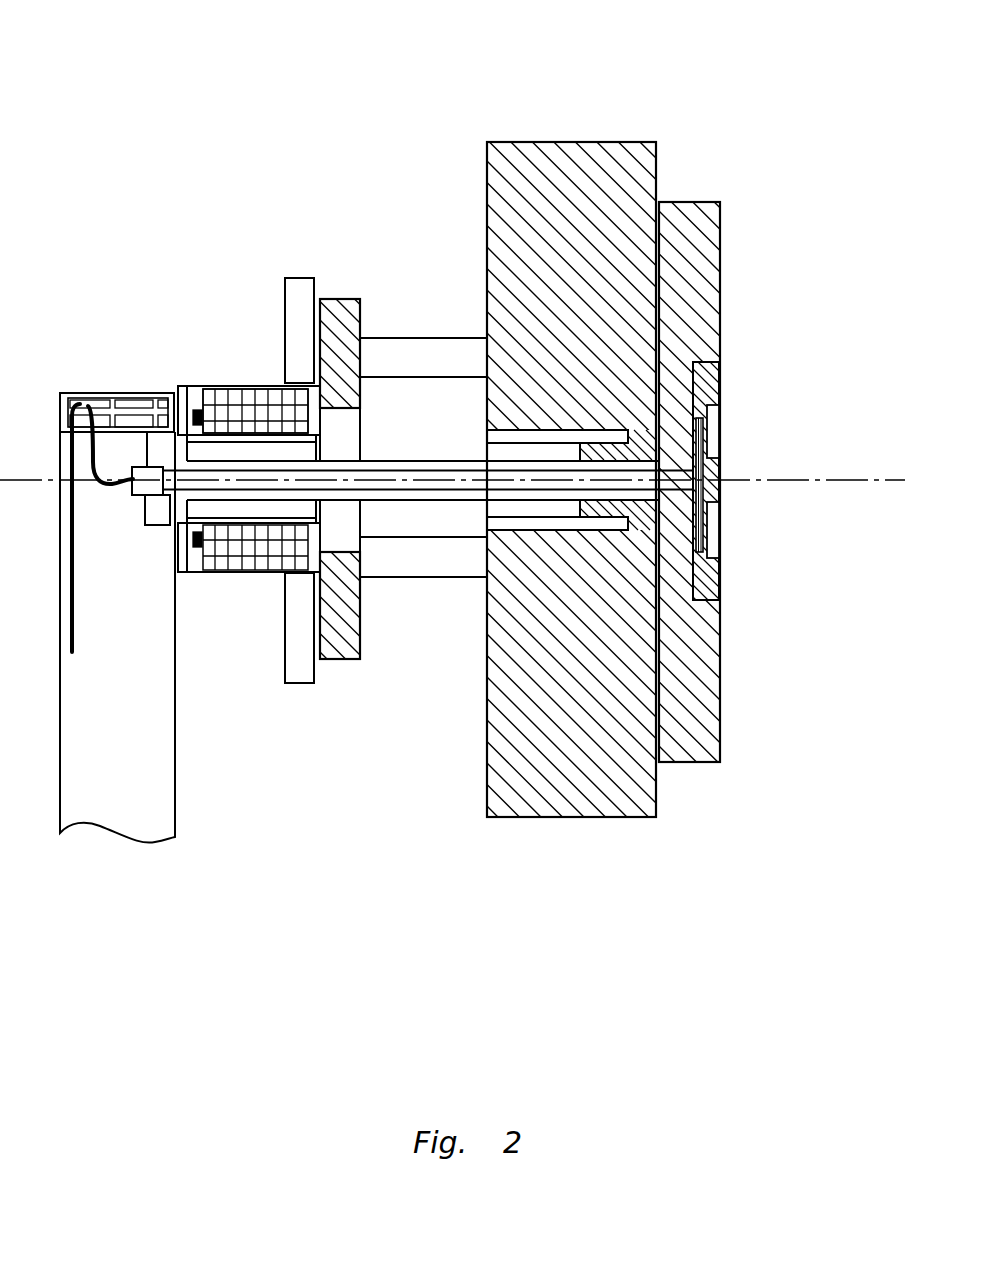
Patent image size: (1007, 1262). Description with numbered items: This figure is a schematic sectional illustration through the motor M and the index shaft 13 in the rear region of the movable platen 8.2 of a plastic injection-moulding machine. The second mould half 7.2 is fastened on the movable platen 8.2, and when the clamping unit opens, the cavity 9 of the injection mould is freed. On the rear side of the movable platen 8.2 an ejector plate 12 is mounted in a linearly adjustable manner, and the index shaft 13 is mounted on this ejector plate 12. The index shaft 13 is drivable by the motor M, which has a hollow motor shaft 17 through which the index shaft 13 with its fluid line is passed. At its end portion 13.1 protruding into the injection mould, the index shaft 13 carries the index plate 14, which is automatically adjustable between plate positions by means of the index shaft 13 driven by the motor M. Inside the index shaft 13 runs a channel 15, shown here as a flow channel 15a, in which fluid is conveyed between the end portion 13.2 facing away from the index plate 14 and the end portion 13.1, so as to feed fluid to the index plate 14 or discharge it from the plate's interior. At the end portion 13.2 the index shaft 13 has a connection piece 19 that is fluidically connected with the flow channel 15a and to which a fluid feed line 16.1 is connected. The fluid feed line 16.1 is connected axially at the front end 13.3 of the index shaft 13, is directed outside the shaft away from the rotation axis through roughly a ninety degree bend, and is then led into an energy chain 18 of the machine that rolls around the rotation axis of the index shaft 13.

The second mould half 7.2 is at (692, 212).
The movable platen 8.2 is at (565, 148).
The cavity 9 is at (713, 432).
The ejector plate 12 is at (343, 308).
The index shaft 13 is at (424, 461).
The end portion of the index shaft protruding into the injection mould 13.1 is at (679, 493).
The end portion of the index shaft facing away from the index plate 13.2 is at (165, 532).
The front end of the index shaft 13.3 is at (143, 508).
The index plate 14 is at (712, 578).
The channel 15 is at (217, 488).
The flow channel 15a is at (209, 600).
The fluid feed line 16.1 is at (97, 466).
The hollow motor shaft 17 is at (264, 453).
The energy chain 18 is at (100, 412).
The connection piece 19 is at (150, 483).
The motor M is at (232, 400).